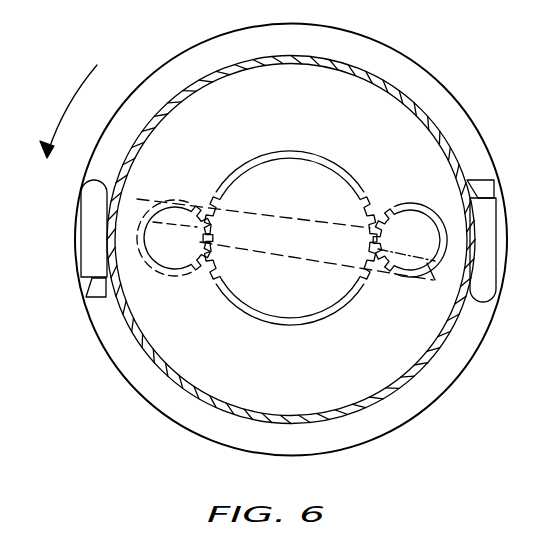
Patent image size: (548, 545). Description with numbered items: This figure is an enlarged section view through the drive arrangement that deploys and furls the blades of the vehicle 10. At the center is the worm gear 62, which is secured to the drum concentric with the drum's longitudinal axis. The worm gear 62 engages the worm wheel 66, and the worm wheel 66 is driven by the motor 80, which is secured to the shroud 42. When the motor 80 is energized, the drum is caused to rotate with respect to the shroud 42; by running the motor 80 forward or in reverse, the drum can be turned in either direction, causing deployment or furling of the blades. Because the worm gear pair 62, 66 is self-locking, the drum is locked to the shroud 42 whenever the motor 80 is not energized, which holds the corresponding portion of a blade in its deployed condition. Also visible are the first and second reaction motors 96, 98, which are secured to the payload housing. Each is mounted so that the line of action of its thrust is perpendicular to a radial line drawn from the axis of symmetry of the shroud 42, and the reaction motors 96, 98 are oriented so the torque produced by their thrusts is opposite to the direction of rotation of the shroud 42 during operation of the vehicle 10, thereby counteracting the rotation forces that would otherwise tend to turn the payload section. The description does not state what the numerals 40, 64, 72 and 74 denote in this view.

The vehicle 10 is at (390, 77).
The outer ring 40 is at (441, 103).
The shroud 42 is at (441, 142).
The worm gear 62 is at (288, 158).
The left pinion gear 64 is at (190, 205).
The worm wheel 66 is at (391, 203).
The left bushing 72 is at (146, 201).
The right bushing 74 is at (435, 280).
The motor 80 is at (263, 243).
The first reaction motor 96 is at (90, 258).
The second reaction motor 98 is at (487, 264).